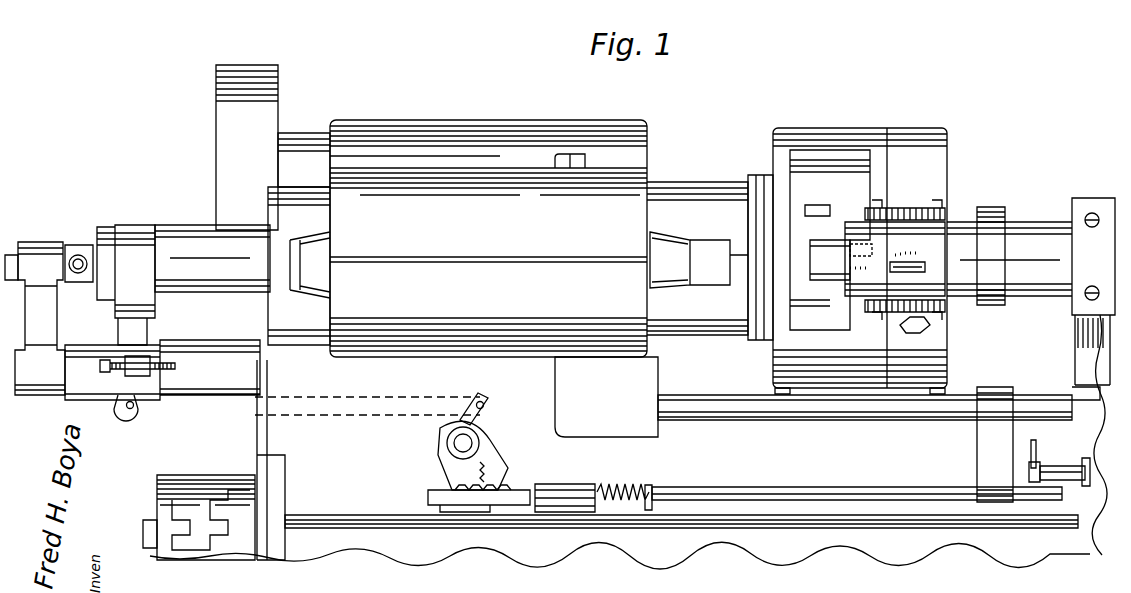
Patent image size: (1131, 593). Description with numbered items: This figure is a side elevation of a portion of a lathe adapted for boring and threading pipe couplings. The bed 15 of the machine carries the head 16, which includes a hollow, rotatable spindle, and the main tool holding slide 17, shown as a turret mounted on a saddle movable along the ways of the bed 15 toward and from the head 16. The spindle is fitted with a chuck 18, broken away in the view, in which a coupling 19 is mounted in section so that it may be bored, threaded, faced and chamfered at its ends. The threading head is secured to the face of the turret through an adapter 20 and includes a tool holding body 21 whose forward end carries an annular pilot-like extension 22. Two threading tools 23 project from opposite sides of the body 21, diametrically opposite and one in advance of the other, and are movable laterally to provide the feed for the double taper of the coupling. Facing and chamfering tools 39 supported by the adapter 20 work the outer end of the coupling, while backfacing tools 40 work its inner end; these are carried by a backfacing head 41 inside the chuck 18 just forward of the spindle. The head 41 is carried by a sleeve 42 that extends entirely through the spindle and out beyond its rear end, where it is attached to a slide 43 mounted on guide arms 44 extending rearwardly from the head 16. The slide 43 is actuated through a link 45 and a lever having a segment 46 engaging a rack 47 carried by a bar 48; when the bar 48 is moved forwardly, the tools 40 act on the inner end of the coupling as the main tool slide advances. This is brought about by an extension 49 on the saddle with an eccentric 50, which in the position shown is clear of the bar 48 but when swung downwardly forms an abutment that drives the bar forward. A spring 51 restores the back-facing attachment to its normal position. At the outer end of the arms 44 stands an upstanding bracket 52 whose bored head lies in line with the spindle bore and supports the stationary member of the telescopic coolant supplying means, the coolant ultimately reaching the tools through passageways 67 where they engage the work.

The bed 15 is at (904, 555).
The head 16 is at (440, 125).
The main tool holding slide 17 is at (1090, 198).
The chuck 18 is at (845, 130).
The coupling 19 is at (920, 210).
The adapter 20 is at (1035, 296).
The tool holding body 21 is at (895, 259).
The annular pilot-like extension 22 is at (825, 280).
The threading tools 23 is at (925, 262).
The facing and chamfering tools 39 is at (970, 210).
The backfacing tools 40 is at (820, 210).
The backfacing head 41 is at (802, 200).
The sleeve 42 is at (182, 238).
The slide 43 is at (138, 326).
The guide arms 44 is at (186, 352).
The link 45 is at (212, 410).
The lever segment 46 is at (492, 460).
The rack 47 is at (520, 490).
The bar 48 is at (740, 487).
The extension 49 is at (1052, 466).
The eccentric 50 is at (1035, 465).
The spring 51 is at (630, 486).
The upstanding bracket 52 is at (35, 242).
The passageways 67 is at (905, 252).